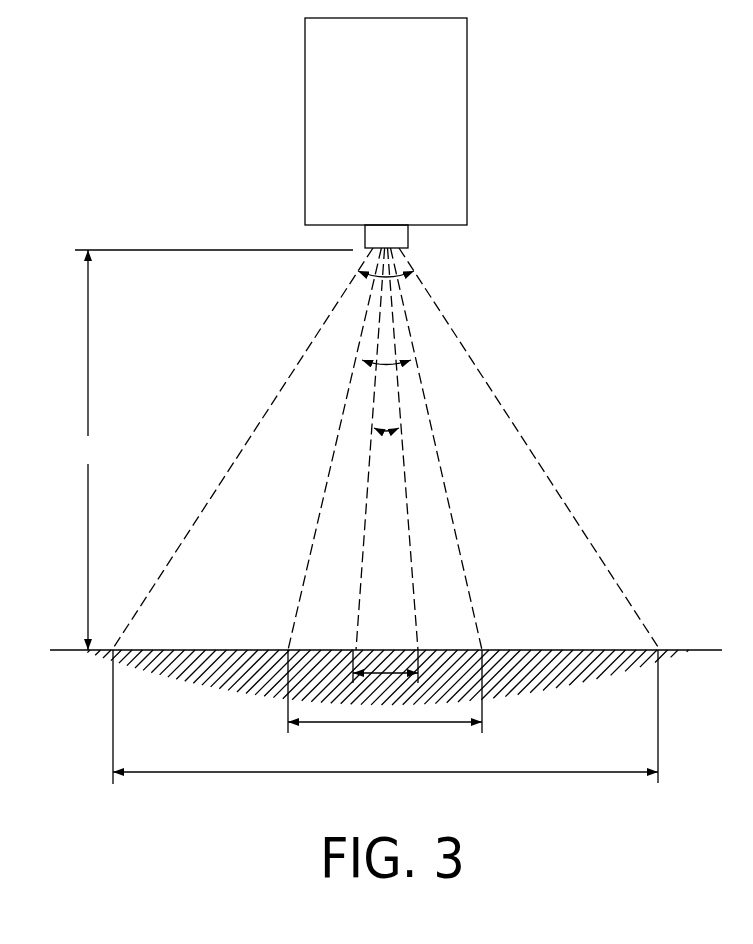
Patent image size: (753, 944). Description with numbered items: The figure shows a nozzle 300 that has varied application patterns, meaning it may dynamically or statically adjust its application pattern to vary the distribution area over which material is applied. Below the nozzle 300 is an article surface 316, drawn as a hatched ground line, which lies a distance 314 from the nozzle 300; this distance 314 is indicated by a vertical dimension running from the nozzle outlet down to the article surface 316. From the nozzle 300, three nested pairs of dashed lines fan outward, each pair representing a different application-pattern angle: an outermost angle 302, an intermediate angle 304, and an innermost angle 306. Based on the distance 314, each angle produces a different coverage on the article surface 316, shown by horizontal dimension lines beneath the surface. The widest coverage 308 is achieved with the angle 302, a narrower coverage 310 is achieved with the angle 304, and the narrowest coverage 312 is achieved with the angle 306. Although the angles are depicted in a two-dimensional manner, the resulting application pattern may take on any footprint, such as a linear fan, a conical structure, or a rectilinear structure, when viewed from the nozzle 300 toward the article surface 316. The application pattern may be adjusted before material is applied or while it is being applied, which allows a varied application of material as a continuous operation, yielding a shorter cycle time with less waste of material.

The nozzle 300 is at (443, 110).
The angle 302 is at (388, 280).
The angle 304 is at (388, 366).
The angle 306 is at (388, 433).
The coverage 308 is at (385, 775).
The coverage 310 is at (385, 725).
The coverage 312 is at (383, 676).
The distance 314 is at (208, 450).
The article surface 316 is at (680, 650).